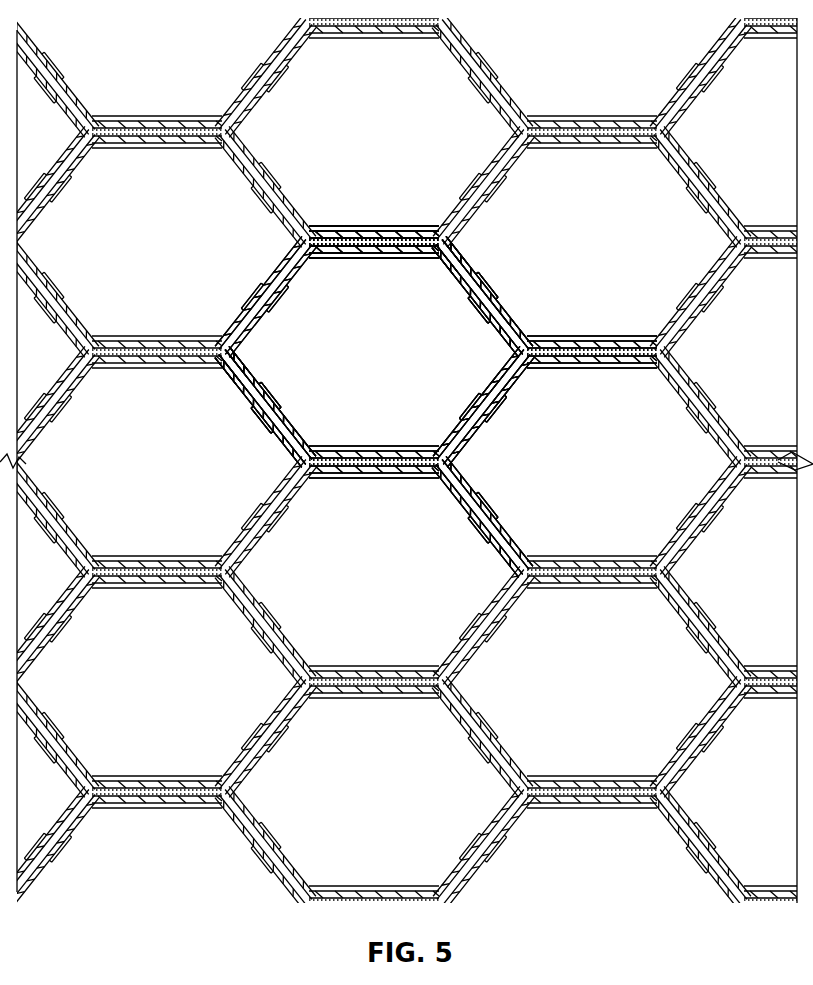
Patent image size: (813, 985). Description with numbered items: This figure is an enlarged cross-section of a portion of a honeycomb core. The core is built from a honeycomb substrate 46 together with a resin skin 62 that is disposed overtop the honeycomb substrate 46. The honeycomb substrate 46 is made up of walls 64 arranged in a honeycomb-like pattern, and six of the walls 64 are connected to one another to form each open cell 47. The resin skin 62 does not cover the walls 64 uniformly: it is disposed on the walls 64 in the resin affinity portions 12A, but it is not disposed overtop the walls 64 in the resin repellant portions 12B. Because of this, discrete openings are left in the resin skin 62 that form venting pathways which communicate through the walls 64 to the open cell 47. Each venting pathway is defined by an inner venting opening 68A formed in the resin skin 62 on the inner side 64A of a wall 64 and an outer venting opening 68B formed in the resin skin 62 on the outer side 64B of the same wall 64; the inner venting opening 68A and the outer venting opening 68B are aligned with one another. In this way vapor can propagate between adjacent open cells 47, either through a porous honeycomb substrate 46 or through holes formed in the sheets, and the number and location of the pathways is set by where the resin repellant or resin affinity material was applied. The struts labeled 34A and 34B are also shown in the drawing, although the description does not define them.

The resin affinity portions 12A is at (478, 495).
The resin repellant portions 12B is at (503, 515).
The first strut 34A is at (405, 234).
The second strut 34B is at (612, 344).
The honeycomb substrate 46 is at (478, 430).
The open cell 47 is at (392, 374).
The resin skin 62 is at (343, 226).
The walls 64 is at (505, 407).
The inner side 64A is at (435, 268).
The outer side 64B is at (457, 246).
The inner venting openings 68A is at (478, 302).
The outer venting openings 68B is at (485, 282).